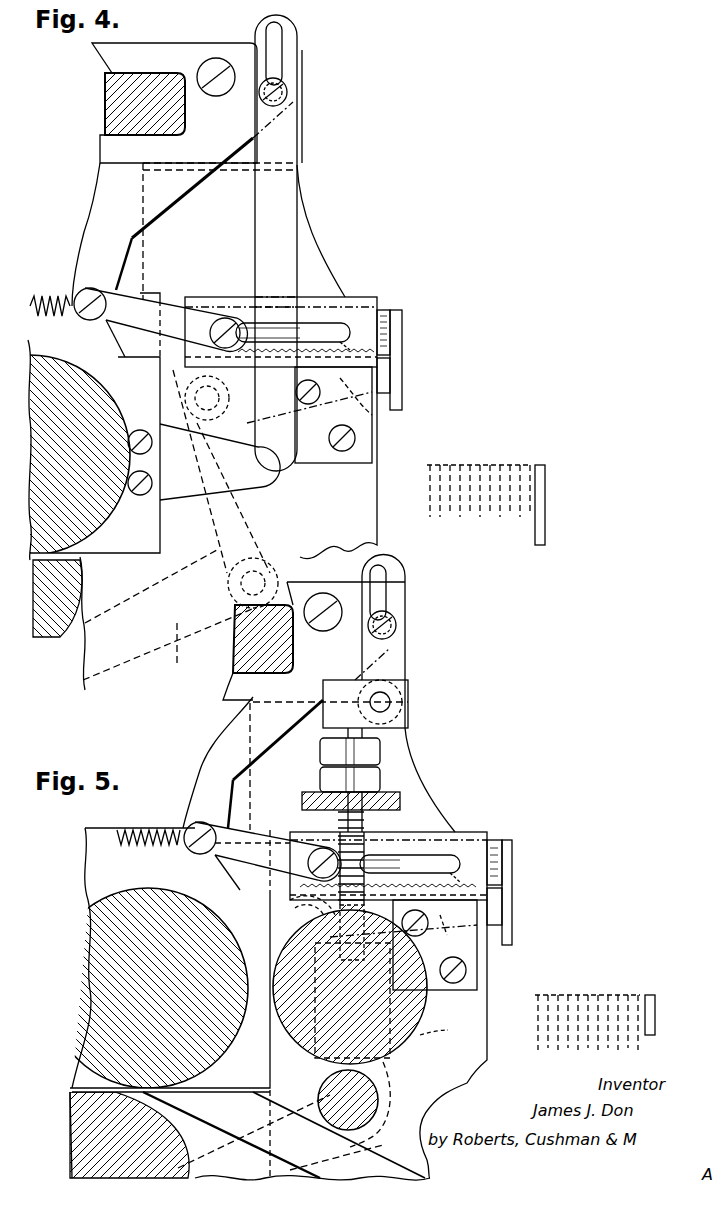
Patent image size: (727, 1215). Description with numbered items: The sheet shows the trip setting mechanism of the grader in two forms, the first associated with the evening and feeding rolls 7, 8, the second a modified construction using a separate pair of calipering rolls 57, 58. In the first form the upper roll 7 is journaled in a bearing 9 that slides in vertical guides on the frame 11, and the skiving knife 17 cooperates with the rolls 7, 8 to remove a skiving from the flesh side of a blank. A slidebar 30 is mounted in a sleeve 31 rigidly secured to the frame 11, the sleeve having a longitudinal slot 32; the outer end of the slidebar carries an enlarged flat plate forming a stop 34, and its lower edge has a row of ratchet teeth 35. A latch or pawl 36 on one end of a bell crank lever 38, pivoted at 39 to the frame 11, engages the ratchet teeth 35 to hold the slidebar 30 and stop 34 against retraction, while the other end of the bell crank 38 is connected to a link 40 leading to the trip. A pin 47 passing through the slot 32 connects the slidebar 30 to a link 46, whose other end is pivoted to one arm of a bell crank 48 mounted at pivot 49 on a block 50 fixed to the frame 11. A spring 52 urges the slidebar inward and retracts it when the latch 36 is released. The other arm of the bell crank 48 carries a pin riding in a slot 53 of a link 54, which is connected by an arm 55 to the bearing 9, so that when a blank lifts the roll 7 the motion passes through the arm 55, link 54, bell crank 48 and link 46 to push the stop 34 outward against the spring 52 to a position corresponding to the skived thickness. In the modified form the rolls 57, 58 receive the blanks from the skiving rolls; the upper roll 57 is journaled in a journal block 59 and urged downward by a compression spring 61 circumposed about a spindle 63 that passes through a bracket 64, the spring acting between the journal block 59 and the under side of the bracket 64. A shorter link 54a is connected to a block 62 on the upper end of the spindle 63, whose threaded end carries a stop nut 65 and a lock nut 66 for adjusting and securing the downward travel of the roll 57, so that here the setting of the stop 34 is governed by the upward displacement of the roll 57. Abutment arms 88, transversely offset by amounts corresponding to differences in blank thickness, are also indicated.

In FIG. 4, the upper evening and feeding roll 7 is at (45, 370).
In FIG. 5, the upper evening and feeding roll 7 is at (210, 1058).
In FIG. 5, the lower evening and feeding roll 8 is at (175, 1140).
In FIG. 4, the bearing 9 is at (148, 528).
In FIG. 5, the bearing 9 is at (257, 1062).
In FIG. 4, the frame 11 is at (305, 240).
In FIG. 5, the frame 11 is at (420, 762).
In FIG. 5, the skiving knife 17 is at (284, 1135).
In FIG. 4, the slidebar 30 is at (385, 312).
In FIG. 4, the sleeve 31 is at (350, 297).
In FIG. 5, the sleeve 31 is at (465, 832).
In FIG. 4, the slot 32 is at (318, 325).
In FIG. 5, the slot 32 is at (430, 860).
In FIG. 4, the stop 34 is at (402, 336).
In FIG. 5, the stop 34 is at (512, 860).
In FIG. 4, the ratchet teeth 35 is at (356, 340).
In FIG. 5, the ratchet teeth 35 is at (466, 868).
In FIG. 4, the latch or pawl 36 is at (385, 375).
In FIG. 5, the latch or pawl 36 is at (495, 908).
In FIG. 4, the bell crank lever 38 is at (372, 405).
In FIG. 5, the bell crank lever 38 is at (403, 945).
In FIG. 4, the pivot 39 is at (210, 405).
In FIG. 4, the link 40 is at (177, 662).
In FIG. 5, the link 40 is at (365, 1148).
In FIG. 4, the link 46 is at (133, 310).
In FIG. 5, the link 46 is at (238, 858).
In FIG. 4, the pin 47 is at (223, 318).
In FIG. 5, the pin 47 is at (320, 848).
In FIG. 4, the bell crank 48 is at (228, 137).
In FIG. 5, the bell crank 48 is at (314, 641).
In FIG. 4, the pivot 49 is at (212, 72).
In FIG. 5, the pivot 49 is at (323, 612).
In FIG. 4, the block 50 is at (300, 128).
In FIG. 4, the spring 52 is at (53, 292).
In FIG. 5, the spring 52 is at (213, 805).
In FIG. 4, the slot 53 is at (278, 58).
In FIG. 5, the slot 53 is at (385, 592).
In FIG. 4, the link 54 is at (280, 200).
In FIG. 5, the link 54a is at (395, 657).
In FIG. 4, the arm 55 is at (220, 485).
In FIG. 5, the upper feeding and calipering roll 57 is at (420, 1010).
In FIG. 5, the lower feeding and calipering roll 58 is at (375, 1082).
In FIG. 5, the journal block 59 is at (392, 1000).
In FIG. 5, the compression spring 61 is at (370, 838).
In FIG. 5, the block 62 is at (408, 715).
In FIG. 5, the spindle 63 is at (380, 852).
In FIG. 5, the bracket 64 is at (385, 790).
In FIG. 5, the stop nut 65 is at (350, 779).
In FIG. 5, the lock nut 66 is at (380, 752).
In FIG. 4, the abutment arm 88 is at (455, 463).
In FIG. 5, the abutment arm 88 is at (560, 1000).